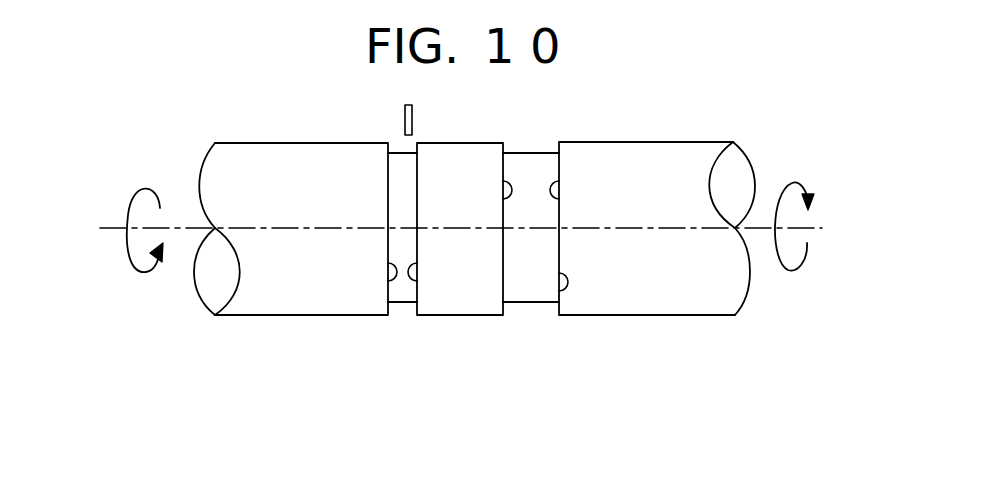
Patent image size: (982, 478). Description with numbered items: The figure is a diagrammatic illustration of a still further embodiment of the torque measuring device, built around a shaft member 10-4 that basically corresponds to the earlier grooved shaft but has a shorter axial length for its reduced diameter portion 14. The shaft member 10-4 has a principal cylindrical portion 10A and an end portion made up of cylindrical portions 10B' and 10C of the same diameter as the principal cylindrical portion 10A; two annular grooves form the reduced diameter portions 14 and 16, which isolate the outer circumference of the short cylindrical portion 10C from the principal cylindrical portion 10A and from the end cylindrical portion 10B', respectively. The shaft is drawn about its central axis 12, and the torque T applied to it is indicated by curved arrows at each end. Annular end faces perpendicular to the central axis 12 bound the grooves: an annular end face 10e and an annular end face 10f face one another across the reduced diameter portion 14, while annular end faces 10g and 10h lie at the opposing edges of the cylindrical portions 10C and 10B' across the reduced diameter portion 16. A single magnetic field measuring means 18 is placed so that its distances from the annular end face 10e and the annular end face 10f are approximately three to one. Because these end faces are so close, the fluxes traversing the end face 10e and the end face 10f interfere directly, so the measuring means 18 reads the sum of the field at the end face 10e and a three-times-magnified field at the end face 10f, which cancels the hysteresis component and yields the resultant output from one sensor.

The shaft member 10-4 is at (240, 124).
The principal cylindrical portion 10A is at (305, 315).
The end cylindrical portion 10B' is at (657, 261).
The cylindrical portion 10C is at (462, 315).
The reduced diameter portion 14 is at (407, 302).
The reduced diameter portion 16 is at (527, 302).
The magnetic field measuring means 18 is at (403, 113).
The central axis 12 is at (626, 229).
The annular end face 10e is at (388, 272).
The annular end face 10f is at (422, 272).
The annular end face 10g is at (500, 190).
The annular end face 10h is at (568, 188).
The torque T is at (133, 203).